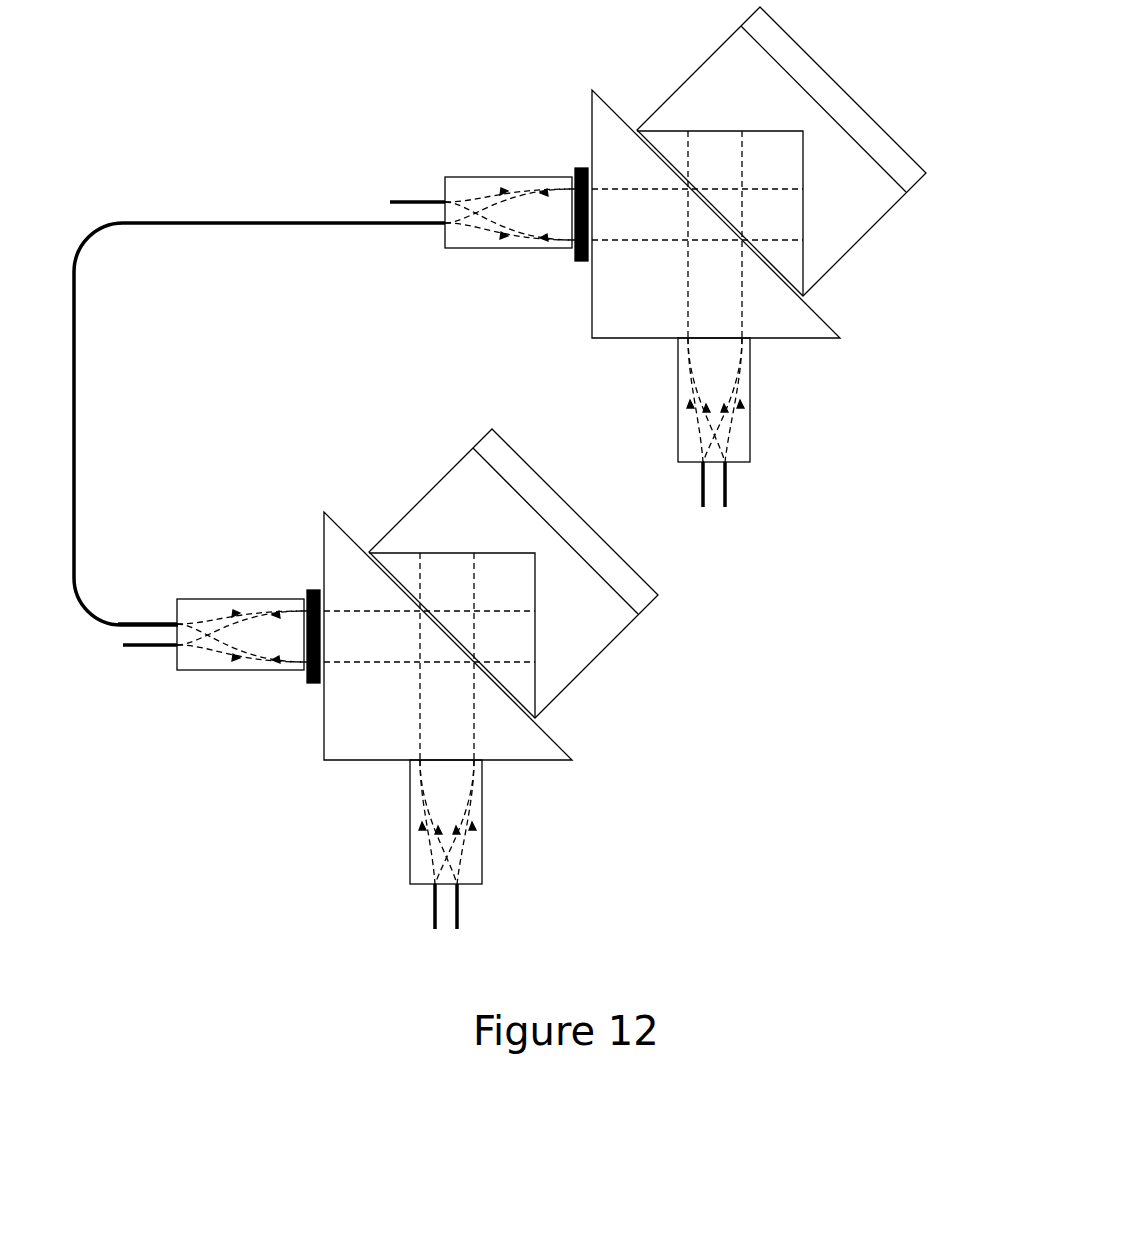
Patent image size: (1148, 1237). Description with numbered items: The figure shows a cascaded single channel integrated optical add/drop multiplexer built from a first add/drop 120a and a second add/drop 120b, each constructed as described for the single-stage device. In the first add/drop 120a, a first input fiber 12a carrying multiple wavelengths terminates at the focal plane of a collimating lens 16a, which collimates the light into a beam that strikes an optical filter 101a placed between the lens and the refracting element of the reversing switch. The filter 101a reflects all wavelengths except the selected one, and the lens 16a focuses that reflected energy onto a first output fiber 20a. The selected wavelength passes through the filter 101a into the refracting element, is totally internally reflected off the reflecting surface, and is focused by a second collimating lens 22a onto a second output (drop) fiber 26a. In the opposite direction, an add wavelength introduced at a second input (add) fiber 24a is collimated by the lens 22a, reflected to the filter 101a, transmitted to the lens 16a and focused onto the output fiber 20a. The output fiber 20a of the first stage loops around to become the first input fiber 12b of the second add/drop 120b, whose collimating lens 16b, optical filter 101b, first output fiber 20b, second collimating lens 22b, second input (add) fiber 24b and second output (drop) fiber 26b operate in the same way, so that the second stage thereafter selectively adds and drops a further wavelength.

The first add/drop 120a is at (840, 31).
The second add/drop 120b is at (481, 594).
The first input fiber 12a is at (405, 201).
The first input fiber 12b is at (147, 609).
The first output fiber 20a is at (435, 225).
The first output fiber 20b is at (148, 659).
The collimating lens 16a is at (498, 177).
The collimating lens 16b is at (240, 620).
The optical filter 101a is at (580, 262).
The optical filter 101b is at (273, 676).
The second collimating lens 22a is at (751, 411).
The second collimating lens 22b is at (470, 822).
The second input (add) fiber 24a is at (728, 501).
The second input (add) fiber 24b is at (484, 906).
The second output (drop) fiber 26a is at (701, 483).
The second output (drop) fiber 26b is at (416, 916).